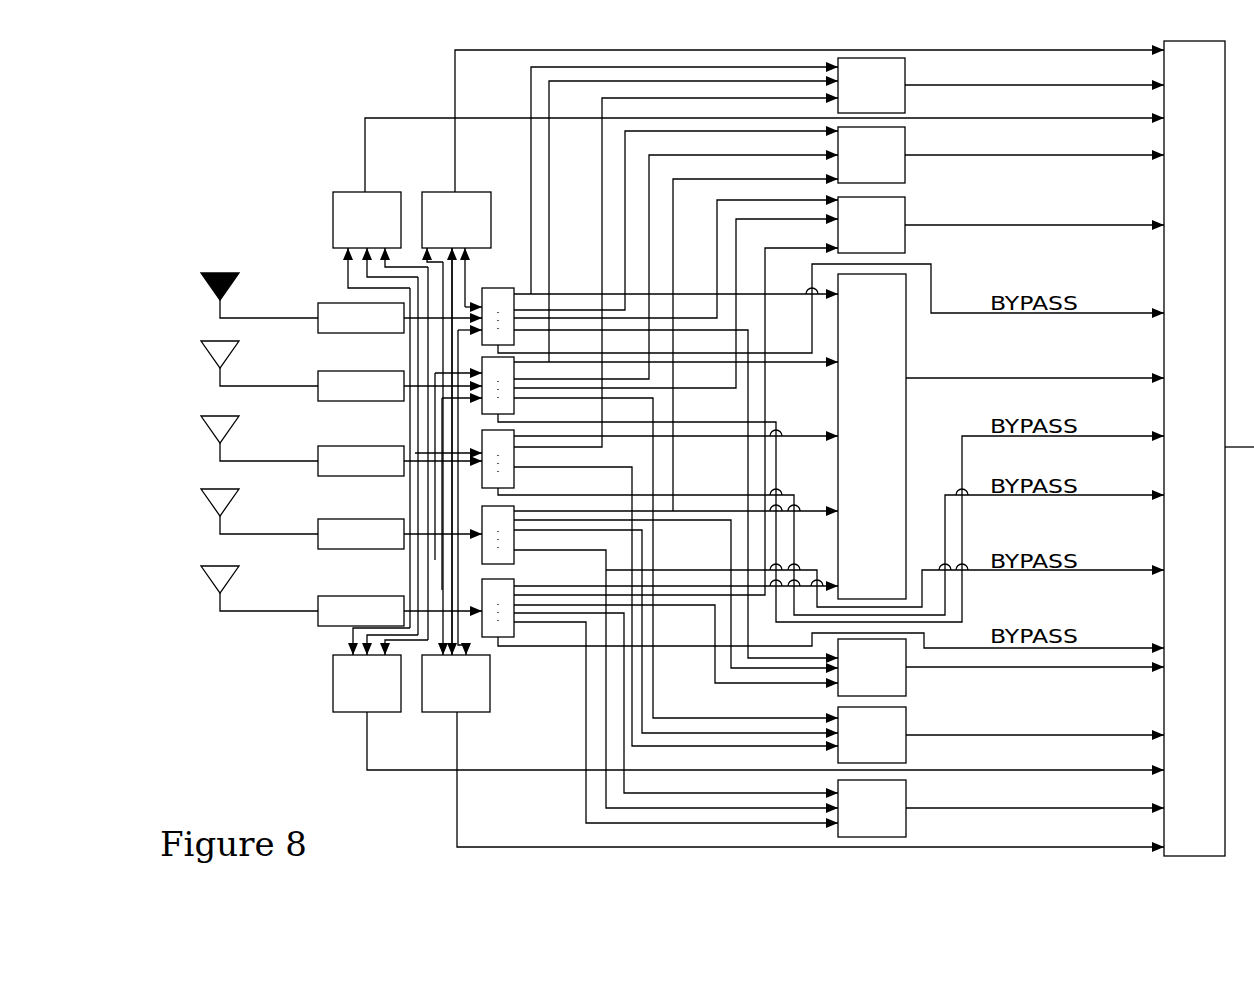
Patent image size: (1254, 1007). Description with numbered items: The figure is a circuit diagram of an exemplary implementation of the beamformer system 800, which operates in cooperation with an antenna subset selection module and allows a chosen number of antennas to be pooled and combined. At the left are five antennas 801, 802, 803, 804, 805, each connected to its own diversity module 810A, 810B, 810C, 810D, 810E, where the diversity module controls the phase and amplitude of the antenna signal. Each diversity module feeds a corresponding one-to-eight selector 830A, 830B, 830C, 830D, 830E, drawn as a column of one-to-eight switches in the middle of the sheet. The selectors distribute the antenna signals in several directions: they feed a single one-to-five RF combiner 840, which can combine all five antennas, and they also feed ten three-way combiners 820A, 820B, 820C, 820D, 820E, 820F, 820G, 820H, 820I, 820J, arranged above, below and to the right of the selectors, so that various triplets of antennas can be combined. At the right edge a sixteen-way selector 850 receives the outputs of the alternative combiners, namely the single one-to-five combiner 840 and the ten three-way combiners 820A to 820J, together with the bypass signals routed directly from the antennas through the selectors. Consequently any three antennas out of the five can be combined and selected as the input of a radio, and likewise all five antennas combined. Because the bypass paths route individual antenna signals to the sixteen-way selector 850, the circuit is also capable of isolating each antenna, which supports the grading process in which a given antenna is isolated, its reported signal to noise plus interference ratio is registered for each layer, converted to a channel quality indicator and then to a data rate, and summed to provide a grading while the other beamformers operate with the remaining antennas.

The system 800 is at (162, 162).
The antenna 801 is at (200, 284).
The antenna 802 is at (200, 352).
The antenna 803 is at (200, 427).
The antenna 804 is at (200, 500).
The antenna 805 is at (200, 577).
The diversity module 810A is at (322, 303).
The diversity module 810B is at (322, 371).
The diversity module 810C is at (322, 446).
The diversity module 810D is at (322, 519).
The diversity module 810E is at (322, 596).
The three-way combiner 820A is at (340, 192).
The three-way combiner 820B is at (425, 192).
The three-way combiner 820C is at (333, 680).
The three-way combiner 820D is at (448, 712).
The three-way combiner 820E is at (905, 65).
The three-way combiner 820F is at (905, 134).
The three-way combiner 820G is at (905, 205).
The three-way combiner 820H is at (906, 685).
The three-way combiner 820I is at (906, 752).
The three-way combiner 820J is at (906, 825).
The 1:8 selector 830A is at (500, 274).
The 1:8 selector 830B is at (514, 406).
The 1:8 selector 830C is at (514, 480).
The 1:8 selector 830D is at (514, 556).
The 1:8 selector 830E is at (492, 637).
The 1:5 RF combiner 840 is at (906, 343).
The sixteen-way selector 850 is at (1163, 186).